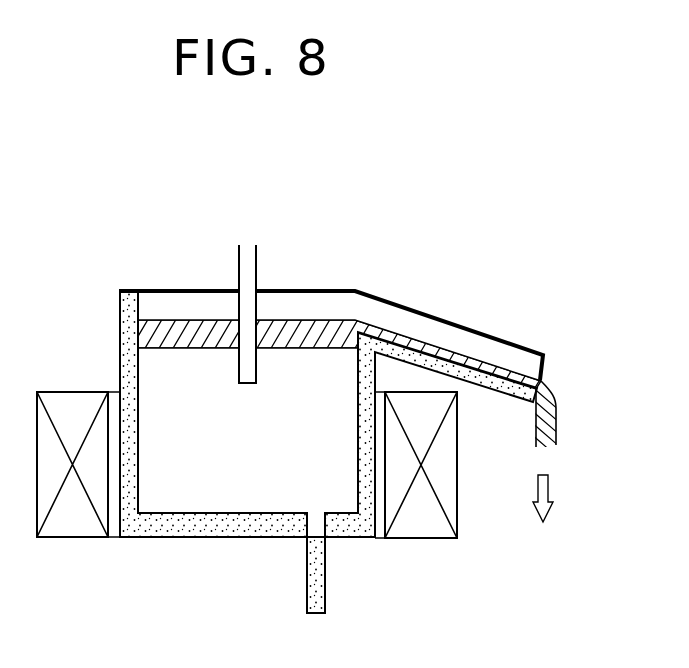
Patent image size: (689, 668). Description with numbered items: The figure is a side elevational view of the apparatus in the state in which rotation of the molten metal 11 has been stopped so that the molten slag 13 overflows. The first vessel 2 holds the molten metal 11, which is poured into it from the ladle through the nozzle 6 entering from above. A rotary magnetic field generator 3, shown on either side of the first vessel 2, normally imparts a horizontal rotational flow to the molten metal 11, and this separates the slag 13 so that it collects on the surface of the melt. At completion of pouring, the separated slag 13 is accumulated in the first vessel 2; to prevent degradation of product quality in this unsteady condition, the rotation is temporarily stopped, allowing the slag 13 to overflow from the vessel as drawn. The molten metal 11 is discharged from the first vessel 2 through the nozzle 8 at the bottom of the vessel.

The first vessel 2 is at (352, 289).
The rotary magnetic field generator 3 is at (457, 480).
The nozzle 6 is at (238, 266).
The nozzle 8 is at (328, 600).
The molten metal 11 is at (328, 451).
The slag 13 is at (558, 418).